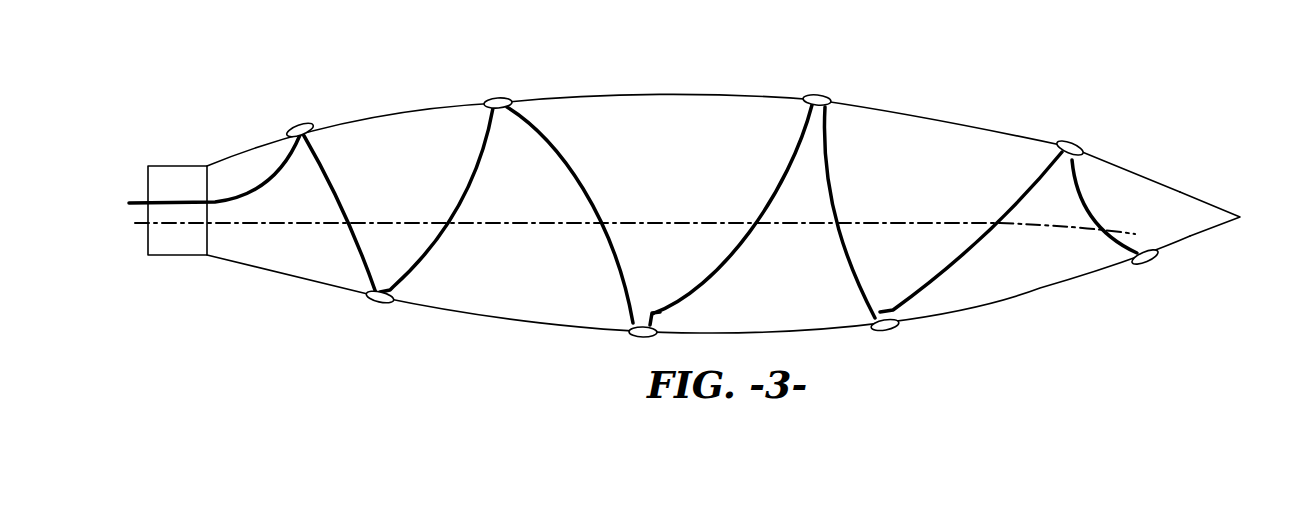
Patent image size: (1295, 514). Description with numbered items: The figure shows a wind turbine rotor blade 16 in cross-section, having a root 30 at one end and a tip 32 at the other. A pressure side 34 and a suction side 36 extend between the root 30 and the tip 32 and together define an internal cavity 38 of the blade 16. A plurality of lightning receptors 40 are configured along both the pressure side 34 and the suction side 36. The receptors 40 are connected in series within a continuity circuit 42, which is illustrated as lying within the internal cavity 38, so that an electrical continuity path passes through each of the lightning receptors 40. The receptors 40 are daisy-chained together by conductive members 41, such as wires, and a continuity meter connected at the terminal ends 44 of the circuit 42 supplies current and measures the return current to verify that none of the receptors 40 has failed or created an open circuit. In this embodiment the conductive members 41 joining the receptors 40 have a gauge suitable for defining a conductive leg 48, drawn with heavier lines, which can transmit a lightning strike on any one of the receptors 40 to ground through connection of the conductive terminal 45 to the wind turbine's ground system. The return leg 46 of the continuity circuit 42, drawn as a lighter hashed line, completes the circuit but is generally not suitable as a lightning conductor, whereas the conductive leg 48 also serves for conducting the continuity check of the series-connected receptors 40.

The wind turbine rotor blade 16 is at (746, 190).
The root 30 is at (193, 166).
The tip 32 is at (1243, 216).
The pressure side 34 is at (618, 93).
The suction side 36 is at (793, 330).
The internal cavity 38 is at (378, 140).
The lightning receptors 40 is at (370, 305).
The conductive members 41 is at (457, 213).
The continuity circuit 42 is at (528, 235).
The terminal ends 44 is at (137, 223).
The conductive terminal 45 is at (140, 200).
The return leg 46 is at (713, 222).
The conductive leg 48 is at (597, 203).